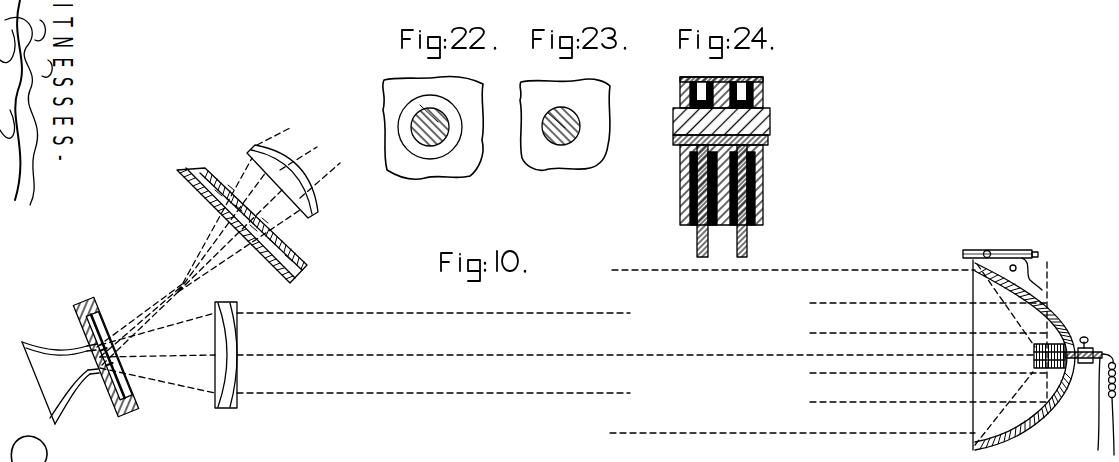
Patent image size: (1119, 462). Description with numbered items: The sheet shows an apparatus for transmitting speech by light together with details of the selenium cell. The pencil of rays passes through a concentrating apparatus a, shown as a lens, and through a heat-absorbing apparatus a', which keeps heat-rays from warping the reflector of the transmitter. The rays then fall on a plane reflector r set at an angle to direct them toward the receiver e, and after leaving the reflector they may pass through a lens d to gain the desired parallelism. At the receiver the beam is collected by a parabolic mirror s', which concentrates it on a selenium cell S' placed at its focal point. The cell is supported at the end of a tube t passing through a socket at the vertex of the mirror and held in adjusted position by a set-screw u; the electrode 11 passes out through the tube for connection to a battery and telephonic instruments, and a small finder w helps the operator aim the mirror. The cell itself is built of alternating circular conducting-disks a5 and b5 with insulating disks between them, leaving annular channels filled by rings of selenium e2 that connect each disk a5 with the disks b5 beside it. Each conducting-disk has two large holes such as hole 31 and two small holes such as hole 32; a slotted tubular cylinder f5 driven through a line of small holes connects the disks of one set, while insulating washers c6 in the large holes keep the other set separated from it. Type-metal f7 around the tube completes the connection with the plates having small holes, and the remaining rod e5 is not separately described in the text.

In FIG. 10, the reflector r is at (100, 331).
In FIG. 10, the lens d is at (247, 333).
In FIG. 10, the concentrating apparatus a is at (277, 173).
In FIG. 10, the heat-absorbing apparatus a' is at (247, 225).
In FIG. 10, the receiver e is at (931, 343).
In FIG. 10, the parabolic mirror s' is at (1026, 356).
In FIG. 10, the finder w is at (1002, 262).
In FIG. 10, the selenium cell S' is at (1053, 354).
In FIG. 10, the set-screw u is at (1087, 337).
In FIG. 10, the tube t is at (1109, 393).
In FIG. 10, the electrode 11 is at (1094, 405).
In FIG. 22, the conducting-disk b5 is at (450, 141).
In FIG. 24, the conducting-disk b5 is at (700, 78).
In FIG. 22, the large hole 31 is at (446, 108).
In FIG. 22, the insulating washer c6 is at (417, 103).
In FIG. 23, the conducting-disk a5 is at (587, 100).
In FIG. 24, the conducting-disk a5 is at (679, 195).
In FIG. 23, the small hole 32 is at (577, 133).
In FIG. 23, the type-metal f7 is at (560, 108).
In FIG. 24, the annular ring of selenium e2 is at (715, 78).
In FIG. 24, the cylinder f5 is at (770, 140).
In FIG. 24, the conductor rod e5 is at (710, 230).